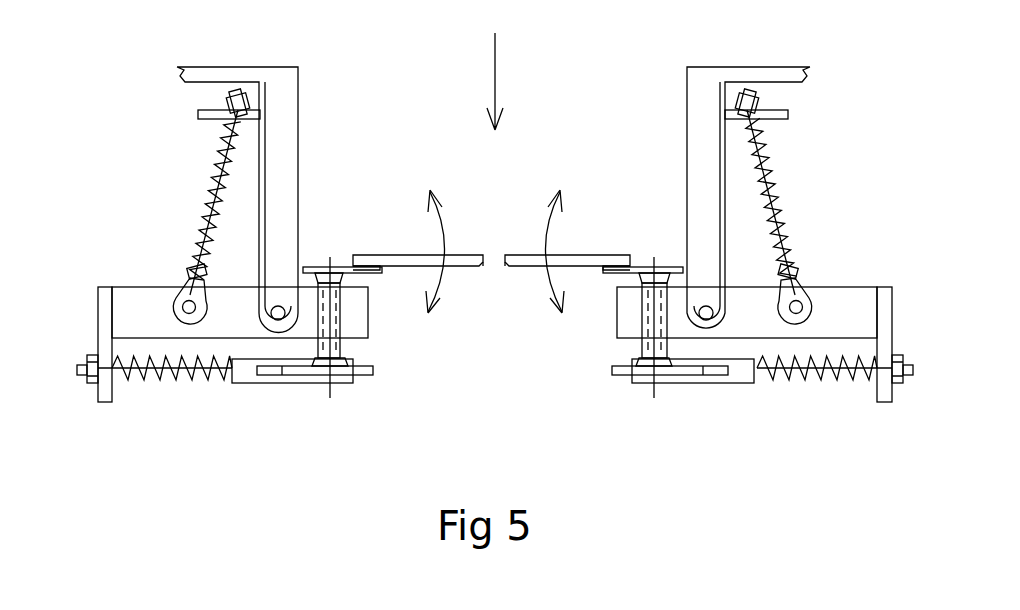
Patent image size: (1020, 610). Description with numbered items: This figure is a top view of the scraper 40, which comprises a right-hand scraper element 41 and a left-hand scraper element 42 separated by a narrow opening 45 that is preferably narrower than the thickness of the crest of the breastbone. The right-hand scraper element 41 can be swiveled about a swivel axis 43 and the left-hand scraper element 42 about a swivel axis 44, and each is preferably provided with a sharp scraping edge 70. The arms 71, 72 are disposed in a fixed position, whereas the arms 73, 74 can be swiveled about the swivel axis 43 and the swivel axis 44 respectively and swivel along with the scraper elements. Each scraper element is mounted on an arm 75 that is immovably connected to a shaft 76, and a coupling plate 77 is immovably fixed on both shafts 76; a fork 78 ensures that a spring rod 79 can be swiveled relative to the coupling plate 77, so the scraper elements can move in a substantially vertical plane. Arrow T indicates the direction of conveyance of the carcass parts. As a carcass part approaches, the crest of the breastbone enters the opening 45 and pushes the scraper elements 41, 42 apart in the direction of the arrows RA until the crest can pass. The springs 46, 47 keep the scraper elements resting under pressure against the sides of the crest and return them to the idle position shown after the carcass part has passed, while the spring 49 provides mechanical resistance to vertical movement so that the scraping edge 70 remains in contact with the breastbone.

The scraper 40 is at (570, 470).
The right-hand scraper element 41 is at (600, 253).
The left-hand scraper element 42 is at (388, 253).
The swivel axis 43 is at (710, 312).
The swivel axis 44 is at (273, 310).
The opening 45 is at (493, 258).
The spring 46 is at (772, 158).
The spring 47 is at (218, 160).
The spring 49 is at (146, 378).
The scraping edge 70 is at (490, 243).
The arm 71 is at (695, 127).
The arm 72 is at (293, 127).
The arm 73 is at (845, 293).
The arm 74 is at (143, 293).
The arm 75 is at (341, 262).
The shaft 76 is at (335, 347).
The coupling plate 77 is at (367, 372).
The fork 78 is at (272, 380).
The spring rod 79 is at (195, 372).